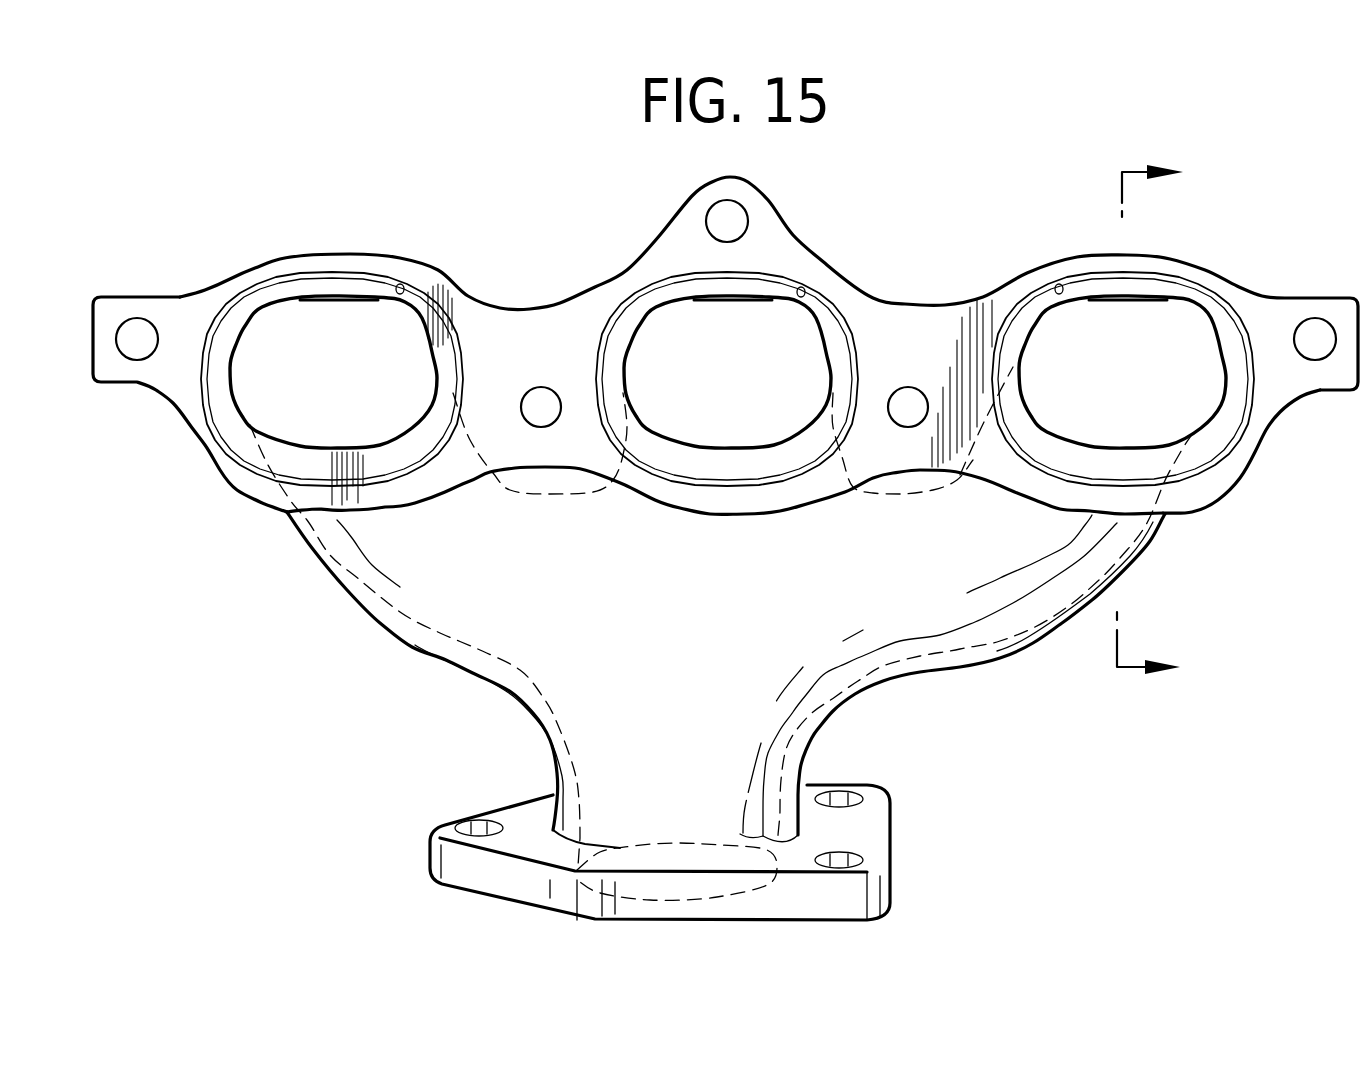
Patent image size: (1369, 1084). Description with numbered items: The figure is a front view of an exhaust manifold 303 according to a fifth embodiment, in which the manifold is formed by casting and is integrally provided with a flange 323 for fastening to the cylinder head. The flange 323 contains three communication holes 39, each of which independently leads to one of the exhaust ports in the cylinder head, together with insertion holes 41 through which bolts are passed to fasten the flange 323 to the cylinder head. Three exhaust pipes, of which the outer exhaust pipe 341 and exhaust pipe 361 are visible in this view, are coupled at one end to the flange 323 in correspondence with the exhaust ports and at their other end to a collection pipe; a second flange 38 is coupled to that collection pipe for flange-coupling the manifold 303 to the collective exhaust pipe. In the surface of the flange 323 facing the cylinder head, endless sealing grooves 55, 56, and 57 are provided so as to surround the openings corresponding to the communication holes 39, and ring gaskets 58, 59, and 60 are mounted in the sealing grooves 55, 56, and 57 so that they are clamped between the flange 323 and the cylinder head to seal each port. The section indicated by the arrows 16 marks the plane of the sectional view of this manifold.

The exhaust manifold 303 is at (980, 680).
The flange 323 is at (920, 333).
The exhaust pipe 341 is at (407, 647).
The exhaust pipe 361 is at (1127, 573).
The flange 38 is at (527, 883).
The communication hole 39 is at (288, 310).
The insertion hole 41 is at (133, 352).
The sealing groove 55 is at (400, 287).
The sealing groove 56 is at (802, 290).
The sealing groove 57 is at (1057, 287).
The ring gasket 58 is at (320, 273).
The ring gasket 59 is at (707, 490).
The ring gasket 60 is at (1062, 495).
The section line 16- 16 is at (1145, 421).